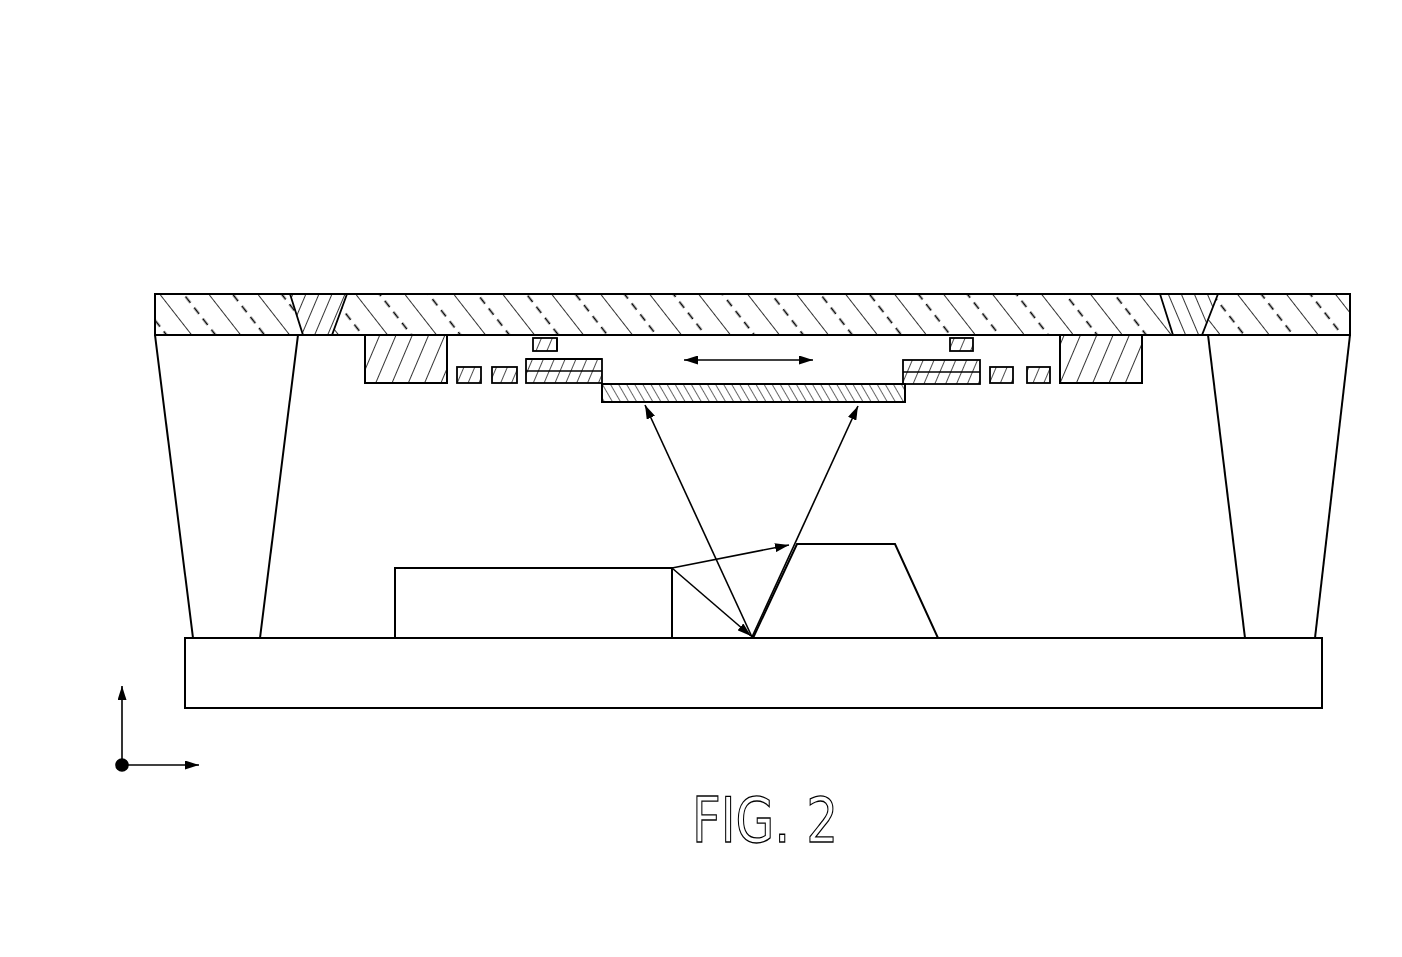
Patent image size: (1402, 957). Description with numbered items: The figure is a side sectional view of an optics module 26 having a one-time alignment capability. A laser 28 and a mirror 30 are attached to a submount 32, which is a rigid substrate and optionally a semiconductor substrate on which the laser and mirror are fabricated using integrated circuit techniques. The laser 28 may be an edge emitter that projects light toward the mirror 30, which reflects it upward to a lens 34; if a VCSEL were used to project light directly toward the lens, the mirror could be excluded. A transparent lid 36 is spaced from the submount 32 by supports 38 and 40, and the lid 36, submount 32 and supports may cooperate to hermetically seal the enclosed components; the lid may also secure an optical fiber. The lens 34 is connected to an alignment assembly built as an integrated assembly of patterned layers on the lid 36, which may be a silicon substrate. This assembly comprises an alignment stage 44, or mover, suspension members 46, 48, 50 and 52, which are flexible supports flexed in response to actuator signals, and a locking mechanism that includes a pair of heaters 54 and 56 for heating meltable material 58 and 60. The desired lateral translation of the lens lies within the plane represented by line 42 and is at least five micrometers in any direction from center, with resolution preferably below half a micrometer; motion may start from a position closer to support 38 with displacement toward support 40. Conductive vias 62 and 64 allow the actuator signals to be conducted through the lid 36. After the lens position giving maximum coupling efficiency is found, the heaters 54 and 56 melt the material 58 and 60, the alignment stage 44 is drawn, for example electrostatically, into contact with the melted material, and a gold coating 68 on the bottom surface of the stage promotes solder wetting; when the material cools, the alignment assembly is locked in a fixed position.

The optics module 26 is at (1271, 139).
The laser 28 is at (435, 573).
The mirror 30 is at (902, 573).
The submount 32 is at (1111, 640).
The lens 34 is at (887, 402).
The lid 36 is at (1276, 296).
The support 38 is at (183, 492).
The support 40 is at (1323, 495).
The line representing plane of lateral translation 42 is at (745, 357).
The alignment stage 44 is at (566, 384).
The suspension member 46 is at (466, 384).
The suspension member 48 is at (510, 384).
The suspension member 50 is at (1000, 384).
The suspension member 52 is at (1036, 384).
The heater 54 is at (546, 338).
The heater 56 is at (960, 338).
The meltable material 58 is at (560, 349).
The meltable material 60 is at (975, 350).
The conductive via 62 is at (316, 305).
The conductive via 64 is at (1186, 296).
The gold coating 68 is at (522, 361).